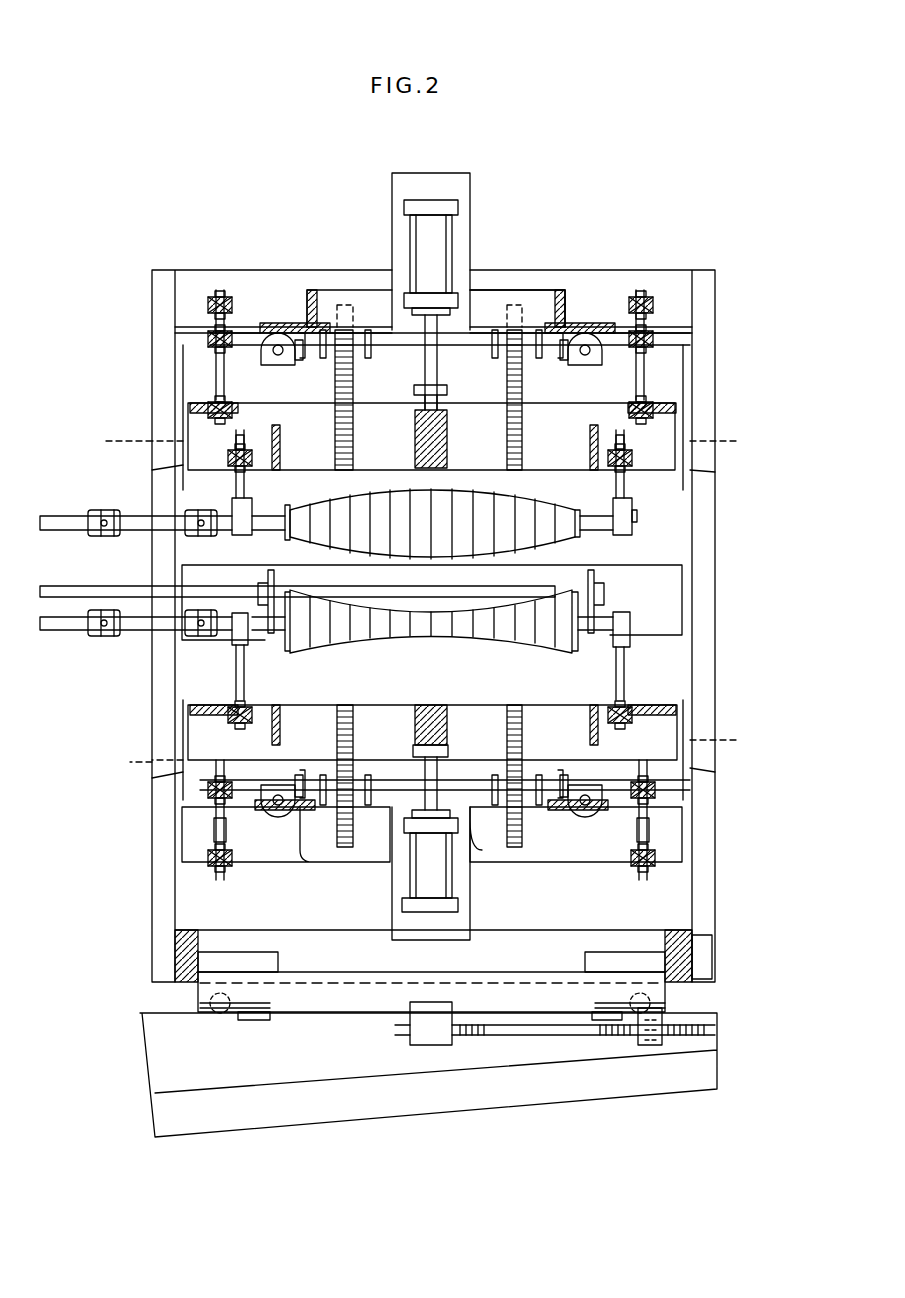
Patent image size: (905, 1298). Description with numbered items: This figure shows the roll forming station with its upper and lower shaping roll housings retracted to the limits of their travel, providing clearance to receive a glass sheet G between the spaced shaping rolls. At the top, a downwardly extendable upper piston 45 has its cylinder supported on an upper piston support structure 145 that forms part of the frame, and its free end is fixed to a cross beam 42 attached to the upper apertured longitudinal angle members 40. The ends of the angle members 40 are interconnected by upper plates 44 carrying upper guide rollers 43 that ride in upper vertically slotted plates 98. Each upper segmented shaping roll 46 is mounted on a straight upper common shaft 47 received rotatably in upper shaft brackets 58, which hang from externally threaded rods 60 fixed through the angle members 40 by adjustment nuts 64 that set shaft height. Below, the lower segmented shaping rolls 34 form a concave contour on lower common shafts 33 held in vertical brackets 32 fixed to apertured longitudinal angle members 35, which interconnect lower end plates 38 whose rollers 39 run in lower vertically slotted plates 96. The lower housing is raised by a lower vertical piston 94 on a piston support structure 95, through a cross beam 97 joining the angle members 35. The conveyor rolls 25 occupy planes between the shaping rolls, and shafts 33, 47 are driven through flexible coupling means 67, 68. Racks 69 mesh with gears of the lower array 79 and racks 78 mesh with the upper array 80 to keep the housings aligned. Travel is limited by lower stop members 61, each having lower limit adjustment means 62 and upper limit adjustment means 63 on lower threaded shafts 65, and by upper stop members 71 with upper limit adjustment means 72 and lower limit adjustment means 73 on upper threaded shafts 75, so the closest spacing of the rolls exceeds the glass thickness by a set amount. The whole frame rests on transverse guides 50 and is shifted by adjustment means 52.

The conveyor rolls 25 is at (577, 575).
The vertical brackets 32 is at (232, 640).
The lower common shafts 33 is at (262, 628).
The lower segmented shaping rolls 34 is at (440, 632).
The apertured longitudinal angle members 35 is at (280, 728).
The lower end plates 38 is at (498, 742).
The roller 39 is at (432, 754).
The upper apertured longitudinal angle members 40 is at (280, 440).
The cross beam 42 is at (447, 455).
The upper guide rollers 43 is at (434, 440).
The upper plates 44 is at (577, 452).
The upper piston 45 is at (418, 243).
The upper segmented shaping rolls 46 is at (490, 495).
The upper common shaft 47 is at (258, 520).
The transverse guides 50 is at (290, 1007).
The adjustment means 52 is at (700, 1020).
The upper shaft brackets 58 is at (633, 510).
The externally threaded rods 60 is at (615, 478).
The lower stop members 61 is at (208, 830).
The lower limit adjustment means 62 is at (208, 793).
The upper limit adjustment means 63 is at (230, 860).
The adjustment nuts 64 is at (225, 468).
The lower threaded shafts 65 is at (226, 828).
The flexible coupling means 67 is at (137, 626).
The flexible coupling means 68 is at (143, 525).
The racks 69 is at (348, 740).
The upper stop members 71 is at (232, 372).
The upper limit adjustment means 72 is at (653, 338).
The lower limit adjustment means 73 is at (653, 305).
The upper threaded shafts 75 is at (633, 378).
The racks 78 is at (345, 382).
The rectangular array of lower horizontal connecting rods and gears 79 is at (404, 770).
The upper array of rods and gears 80 is at (358, 368).
The lower vertical piston 94 is at (412, 875).
The piston support structure 95 is at (378, 840).
The lower vertically slotted plates 96 is at (735, 778).
The cross beam 97 is at (432, 720).
The upper vertically slotted plates 98 is at (735, 475).
The upper piston support structure 145 is at (478, 275).
The glass sheets G is at (339, 574).